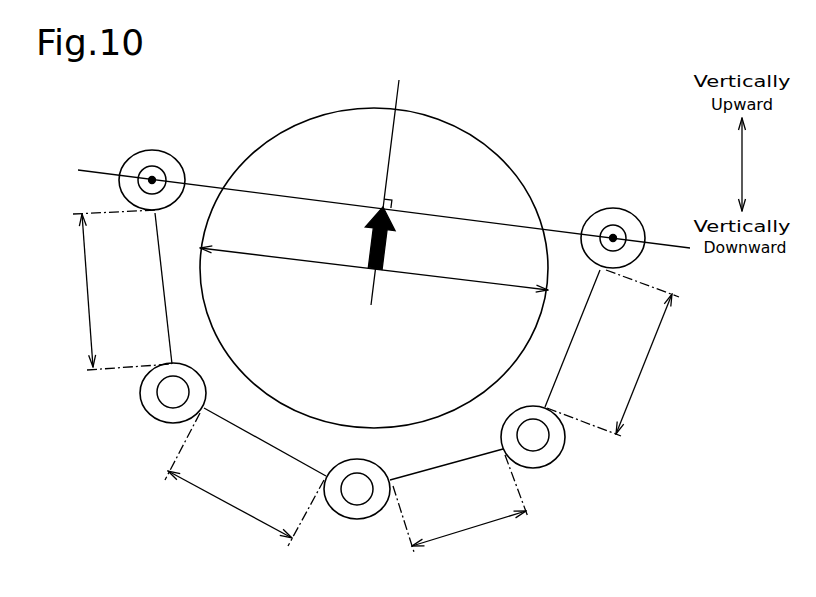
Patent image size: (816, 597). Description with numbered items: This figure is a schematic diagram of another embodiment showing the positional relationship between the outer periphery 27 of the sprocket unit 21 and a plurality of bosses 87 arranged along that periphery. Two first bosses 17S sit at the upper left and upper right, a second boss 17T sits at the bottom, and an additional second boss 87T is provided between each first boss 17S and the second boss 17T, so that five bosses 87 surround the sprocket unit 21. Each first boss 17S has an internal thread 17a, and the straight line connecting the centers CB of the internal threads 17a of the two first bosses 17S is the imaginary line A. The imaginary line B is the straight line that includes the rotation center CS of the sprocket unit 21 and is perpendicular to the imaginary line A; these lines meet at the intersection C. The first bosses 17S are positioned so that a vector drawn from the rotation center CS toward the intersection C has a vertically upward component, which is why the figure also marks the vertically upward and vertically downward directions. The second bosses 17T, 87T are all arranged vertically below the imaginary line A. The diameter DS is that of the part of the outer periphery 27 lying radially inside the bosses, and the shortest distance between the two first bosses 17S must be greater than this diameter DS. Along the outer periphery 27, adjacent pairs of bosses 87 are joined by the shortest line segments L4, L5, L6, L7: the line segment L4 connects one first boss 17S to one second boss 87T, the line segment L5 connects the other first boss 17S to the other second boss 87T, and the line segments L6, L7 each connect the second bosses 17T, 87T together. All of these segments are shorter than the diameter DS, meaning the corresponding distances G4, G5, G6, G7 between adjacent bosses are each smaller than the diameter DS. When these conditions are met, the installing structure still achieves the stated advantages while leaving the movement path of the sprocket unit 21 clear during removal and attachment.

The outer periphery 27 is at (468, 130).
The sprocket unit 21 is at (381, 268).
The first boss 17S is at (124, 160).
The second boss 17T is at (340, 521).
The additional second boss 87T is at (140, 391).
The bosses 87 is at (351, 343).
The internal thread 17a is at (150, 167).
The center of internal thread CB is at (174, 172).
The imaginary line A is at (454, 217).
The imaginary line B is at (391, 140).
The intersection C is at (382, 203).
The rotation center CS is at (372, 269).
The diameter DS is at (447, 278).
The line segment L4 is at (162, 284).
The line segment L5 is at (573, 340).
The line segment L6 is at (258, 439).
The line segment L7 is at (445, 466).
The distance G4 is at (86, 292).
The distance G5 is at (646, 360).
The distance G6 is at (223, 501).
The distance G7 is at (470, 529).